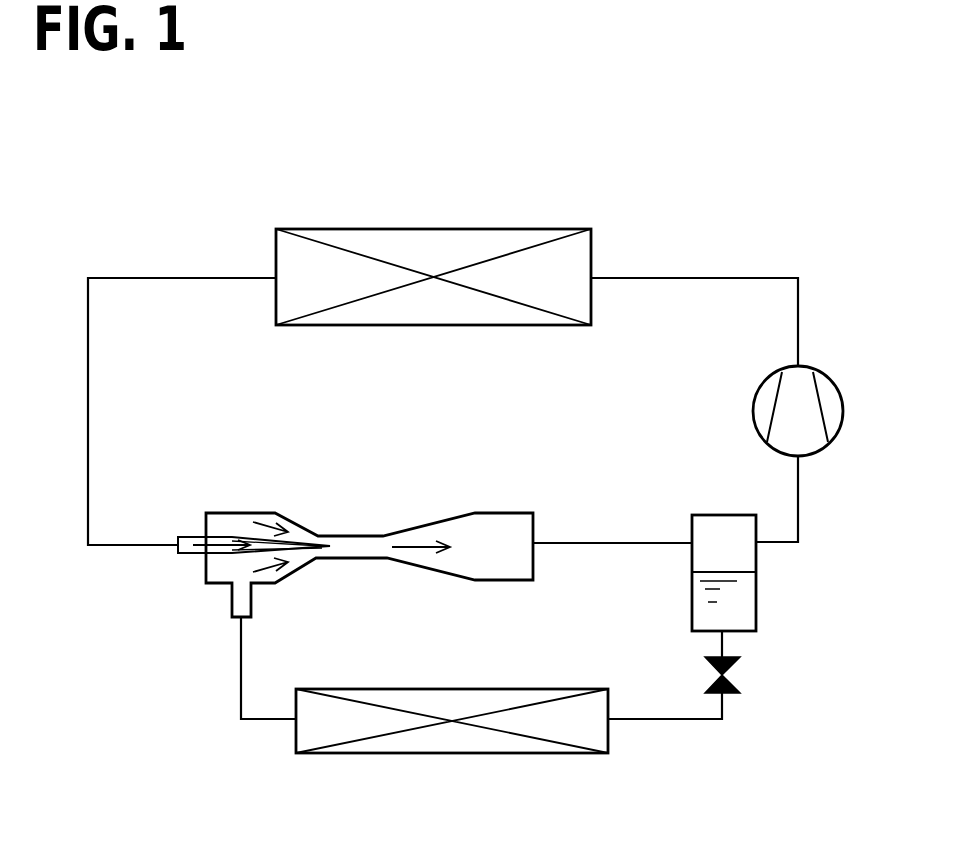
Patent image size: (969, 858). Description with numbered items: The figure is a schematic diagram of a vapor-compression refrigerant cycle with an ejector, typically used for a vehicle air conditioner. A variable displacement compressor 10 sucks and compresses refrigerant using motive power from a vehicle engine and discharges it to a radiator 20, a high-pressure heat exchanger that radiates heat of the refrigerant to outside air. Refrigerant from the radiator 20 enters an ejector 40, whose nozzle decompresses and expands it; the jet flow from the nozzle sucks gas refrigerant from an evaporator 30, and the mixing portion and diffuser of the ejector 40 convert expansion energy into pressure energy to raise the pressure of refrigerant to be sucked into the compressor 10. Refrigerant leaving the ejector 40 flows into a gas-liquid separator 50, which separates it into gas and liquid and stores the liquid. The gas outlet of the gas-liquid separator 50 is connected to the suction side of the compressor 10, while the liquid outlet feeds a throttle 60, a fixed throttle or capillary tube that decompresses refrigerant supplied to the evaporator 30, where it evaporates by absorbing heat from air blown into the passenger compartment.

The compressor 10 is at (837, 384).
The radiator 20 is at (532, 228).
The evaporator 30 is at (525, 754).
The ejector 40 is at (372, 535).
The gas-liquid separator 50 is at (757, 603).
The throttle 60 is at (735, 682).